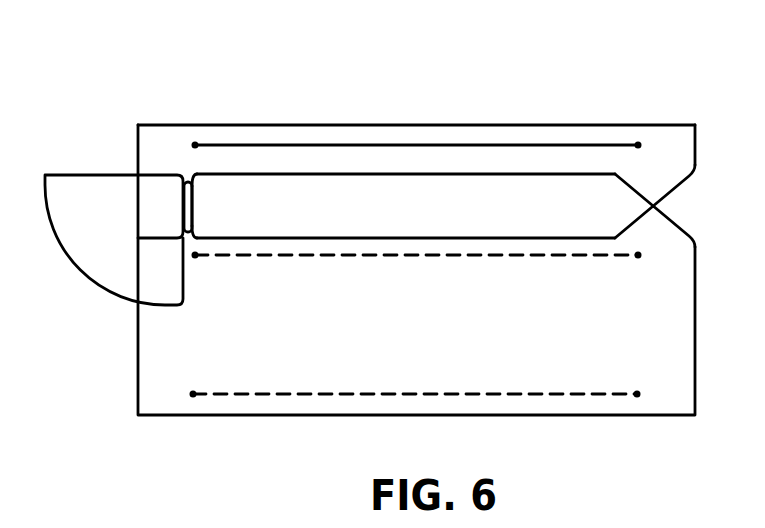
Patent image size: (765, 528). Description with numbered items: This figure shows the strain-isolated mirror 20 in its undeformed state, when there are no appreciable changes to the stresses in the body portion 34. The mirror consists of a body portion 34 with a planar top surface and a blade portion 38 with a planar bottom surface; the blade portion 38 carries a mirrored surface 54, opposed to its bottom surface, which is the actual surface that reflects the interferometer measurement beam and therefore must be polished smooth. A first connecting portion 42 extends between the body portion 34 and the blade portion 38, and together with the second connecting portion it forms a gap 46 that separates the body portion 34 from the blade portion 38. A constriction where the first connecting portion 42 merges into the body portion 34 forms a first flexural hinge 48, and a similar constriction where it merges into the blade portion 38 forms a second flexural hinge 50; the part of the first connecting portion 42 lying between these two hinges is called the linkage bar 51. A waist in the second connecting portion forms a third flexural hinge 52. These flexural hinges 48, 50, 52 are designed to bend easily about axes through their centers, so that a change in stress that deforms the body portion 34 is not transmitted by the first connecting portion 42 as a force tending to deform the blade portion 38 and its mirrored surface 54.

The strain-isolated mirror 20 is at (317, 88).
The body portion 34 is at (440, 347).
The blade portion 38 is at (430, 135).
The first connecting portion 42 is at (158, 208).
The gap 46 is at (412, 225).
The first flexural hinge 48 is at (195, 230).
The second flexural hinge 50 is at (195, 184).
The linkage bar 51 is at (193, 205).
The third flexural hinge 52 is at (643, 203).
The mirrored surface 54 is at (535, 124).